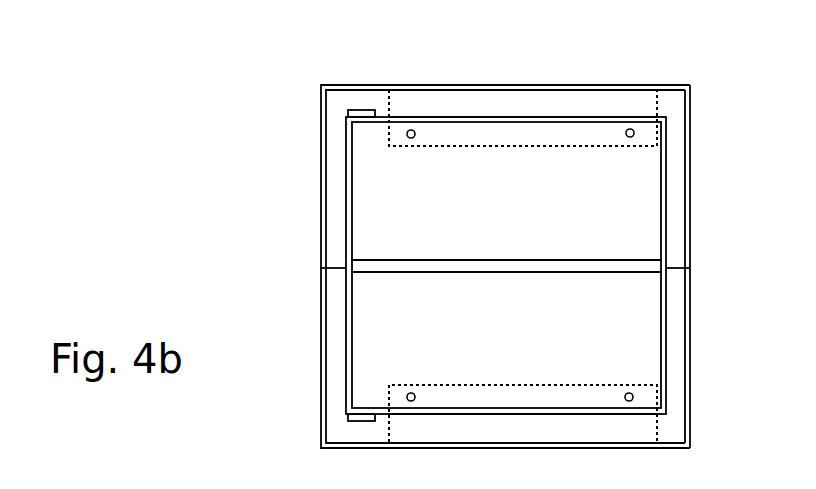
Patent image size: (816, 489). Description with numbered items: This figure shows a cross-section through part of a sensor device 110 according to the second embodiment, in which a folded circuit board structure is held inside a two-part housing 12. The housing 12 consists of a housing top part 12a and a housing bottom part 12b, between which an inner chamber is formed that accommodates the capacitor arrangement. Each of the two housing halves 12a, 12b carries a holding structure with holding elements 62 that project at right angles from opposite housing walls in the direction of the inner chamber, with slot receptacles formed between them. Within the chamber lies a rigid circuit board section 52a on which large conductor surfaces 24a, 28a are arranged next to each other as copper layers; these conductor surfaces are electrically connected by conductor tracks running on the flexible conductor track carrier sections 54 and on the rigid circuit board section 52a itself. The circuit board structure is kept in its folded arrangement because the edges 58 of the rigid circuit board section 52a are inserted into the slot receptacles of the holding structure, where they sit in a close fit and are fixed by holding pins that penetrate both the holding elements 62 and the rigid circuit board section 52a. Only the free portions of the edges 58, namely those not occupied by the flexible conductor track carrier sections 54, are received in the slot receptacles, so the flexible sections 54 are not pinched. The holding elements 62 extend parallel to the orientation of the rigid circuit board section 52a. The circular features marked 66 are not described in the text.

The sensor device 110 is at (703, 64).
The two-part housing 12 is at (270, 99).
The housing top part 12a is at (690, 183).
The housing bottom part 12b is at (690, 330).
The conductor surface 24a is at (365, 188).
The conductor surface 28a is at (363, 321).
The rigid circuit board section 52a is at (663, 373).
The flexible conductor track carrier section 54 is at (360, 110).
The edge 58 is at (447, 118).
The holding element 62 is at (555, 105).
The fastener hole 66 is at (413, 129).